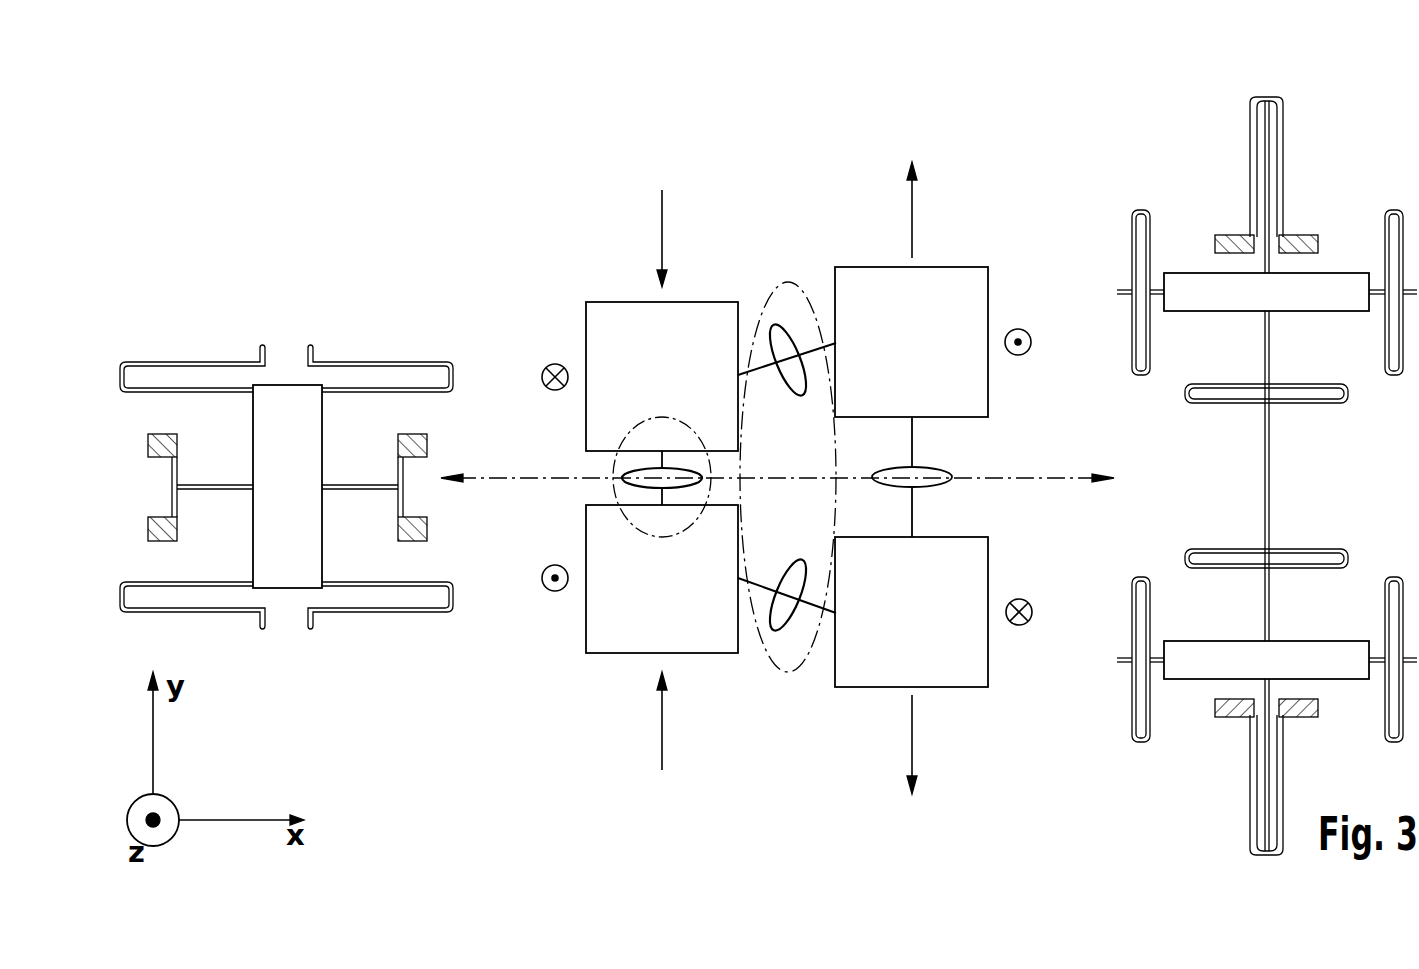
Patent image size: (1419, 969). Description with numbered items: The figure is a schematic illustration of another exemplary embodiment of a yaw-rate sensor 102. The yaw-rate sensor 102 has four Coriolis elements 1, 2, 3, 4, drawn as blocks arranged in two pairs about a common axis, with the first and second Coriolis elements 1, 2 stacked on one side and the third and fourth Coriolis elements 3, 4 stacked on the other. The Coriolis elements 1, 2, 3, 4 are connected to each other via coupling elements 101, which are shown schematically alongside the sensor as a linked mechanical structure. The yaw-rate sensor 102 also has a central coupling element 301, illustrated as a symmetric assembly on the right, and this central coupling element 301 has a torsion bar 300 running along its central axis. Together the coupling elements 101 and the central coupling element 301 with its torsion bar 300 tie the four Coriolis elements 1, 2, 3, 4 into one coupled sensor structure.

The coupling elements 101 is at (187, 310).
The yaw-rate sensor 102 is at (777, 432).
The Coriolis element 1 is at (586, 318).
The Coriolis element 2 is at (586, 640).
The Coriolis element 3 is at (988, 315).
The Coriolis element 4 is at (988, 638).
The torsion bar 300 is at (1217, 492).
The central coupling element 301 is at (1267, 450).